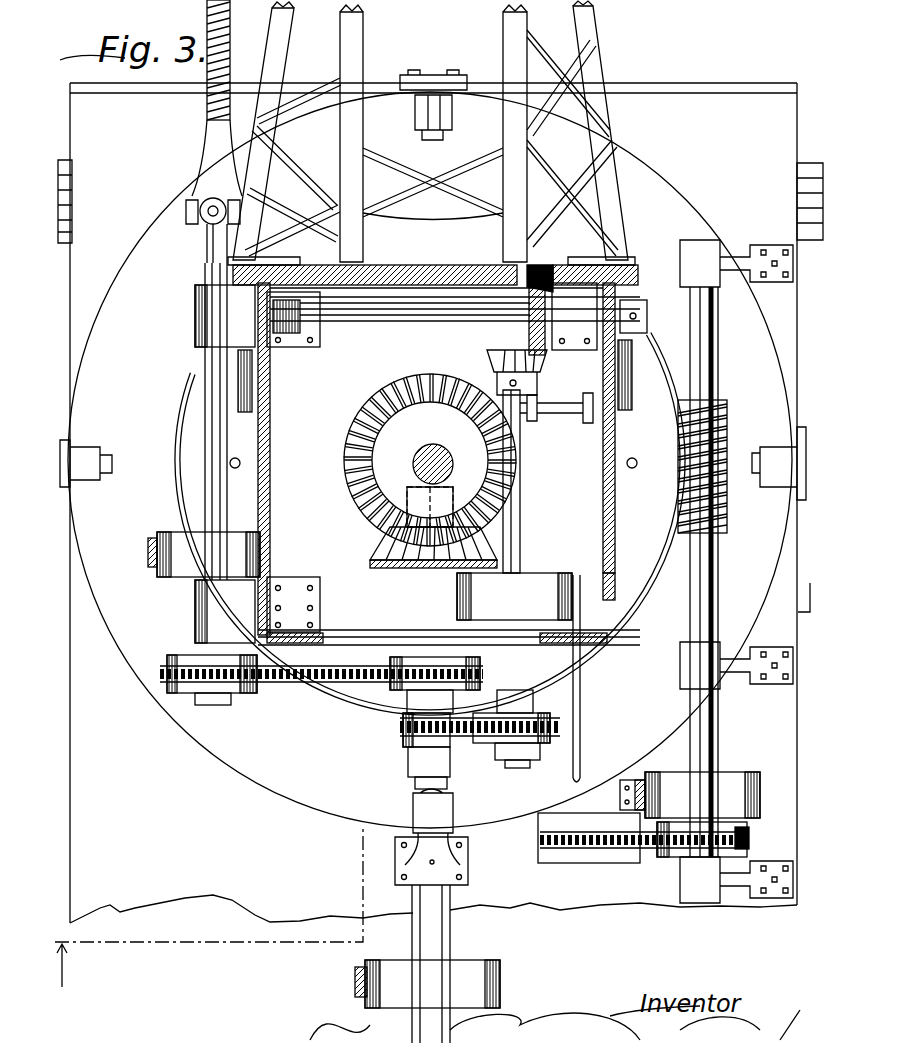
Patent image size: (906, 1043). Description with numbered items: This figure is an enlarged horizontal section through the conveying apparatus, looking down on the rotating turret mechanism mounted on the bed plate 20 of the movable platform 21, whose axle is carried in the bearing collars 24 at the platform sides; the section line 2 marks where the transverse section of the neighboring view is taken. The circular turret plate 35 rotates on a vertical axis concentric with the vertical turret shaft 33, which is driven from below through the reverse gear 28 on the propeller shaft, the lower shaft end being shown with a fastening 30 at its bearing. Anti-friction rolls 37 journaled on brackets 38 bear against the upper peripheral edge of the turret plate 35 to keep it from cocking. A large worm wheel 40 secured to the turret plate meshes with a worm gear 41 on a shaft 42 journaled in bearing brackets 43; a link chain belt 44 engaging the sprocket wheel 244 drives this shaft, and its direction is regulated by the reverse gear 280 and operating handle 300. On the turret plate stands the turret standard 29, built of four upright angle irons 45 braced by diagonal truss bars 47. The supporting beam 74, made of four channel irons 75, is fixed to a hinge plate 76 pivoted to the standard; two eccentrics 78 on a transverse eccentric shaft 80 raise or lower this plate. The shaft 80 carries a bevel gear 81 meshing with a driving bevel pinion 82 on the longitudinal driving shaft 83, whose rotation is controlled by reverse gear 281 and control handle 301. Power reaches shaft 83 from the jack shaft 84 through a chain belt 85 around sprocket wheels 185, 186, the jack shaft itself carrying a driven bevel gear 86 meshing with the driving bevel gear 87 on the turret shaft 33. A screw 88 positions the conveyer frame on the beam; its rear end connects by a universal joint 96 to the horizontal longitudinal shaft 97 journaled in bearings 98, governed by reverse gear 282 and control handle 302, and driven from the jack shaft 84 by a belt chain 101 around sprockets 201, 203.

The section line 2— 2 is at (428, 774).
The bed plate 20 is at (187, 920).
The movable platform 21 is at (73, 93).
The bearing collars 24 is at (63, 193).
The reverse gear 28 is at (432, 984).
The turret standard 29 is at (293, 600).
The nut on lower shaft 30 is at (358, 998).
The vertical turret shaft 33 is at (432, 444).
The turret plate 35 is at (663, 173).
The anti-friction rolls 37 is at (415, 110).
The brackets 38 is at (430, 75).
The worm wheel 40 is at (670, 547).
The worm gear 41 is at (725, 520).
The worm shaft 42 is at (703, 583).
The bearing brackets 43 is at (723, 290).
The link chain belt 44 is at (610, 863).
The upright angle irons 45 is at (607, 590).
The diagonal truss bars 47 is at (385, 293).
The supporting beam 74 is at (575, 80).
The channel irons 75 is at (277, 34).
The hinge plate 76 is at (634, 270).
The eccentrics 78 is at (252, 370).
The eccentric shaft 80 is at (450, 321).
The bevel gear 81 is at (529, 333).
The driving bevel pinion 82 is at (490, 358).
The longitudinal driving shaft 83 is at (520, 510).
The jack shaft 84 is at (420, 780).
The chain belt 85 is at (487, 743).
The driven bevel gear 86 is at (395, 566).
The driving bevel gear 87 is at (344, 465).
The screw 88 is at (205, 15).
The universal joint 96 is at (210, 216).
The horizontal longitudinal shaft 97 is at (207, 440).
The bearings 98 is at (197, 305).
The belt chain 101 is at (275, 687).
The sprocket wheel 185 is at (397, 727).
The sprocket wheel 186 is at (560, 727).
The sprocket 201 is at (483, 680).
The sprocket 203 is at (157, 675).
The sprocket wheel 244 is at (750, 840).
The reverse gear 280 is at (717, 777).
The reverse gear 281 is at (514, 596).
The reverse gear 282 is at (177, 533).
The operating handle 300 is at (640, 780).
The control handle 301 is at (573, 767).
The control handle 302 is at (150, 568).